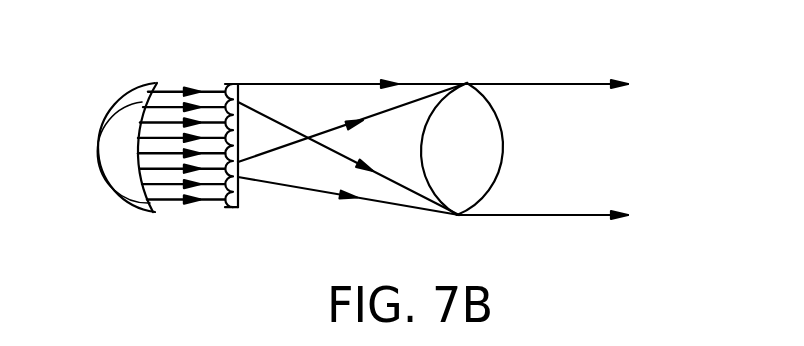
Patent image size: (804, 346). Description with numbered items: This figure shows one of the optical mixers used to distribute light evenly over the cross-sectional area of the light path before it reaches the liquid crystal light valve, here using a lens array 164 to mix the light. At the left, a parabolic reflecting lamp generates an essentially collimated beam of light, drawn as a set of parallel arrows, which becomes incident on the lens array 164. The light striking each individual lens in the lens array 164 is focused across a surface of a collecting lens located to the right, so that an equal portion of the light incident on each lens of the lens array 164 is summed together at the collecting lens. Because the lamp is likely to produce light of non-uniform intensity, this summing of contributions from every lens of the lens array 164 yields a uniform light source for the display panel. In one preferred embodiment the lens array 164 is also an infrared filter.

The lens array 164 is at (238, 207).